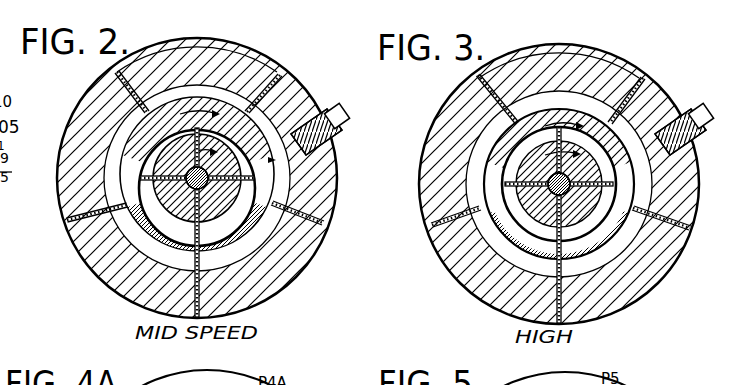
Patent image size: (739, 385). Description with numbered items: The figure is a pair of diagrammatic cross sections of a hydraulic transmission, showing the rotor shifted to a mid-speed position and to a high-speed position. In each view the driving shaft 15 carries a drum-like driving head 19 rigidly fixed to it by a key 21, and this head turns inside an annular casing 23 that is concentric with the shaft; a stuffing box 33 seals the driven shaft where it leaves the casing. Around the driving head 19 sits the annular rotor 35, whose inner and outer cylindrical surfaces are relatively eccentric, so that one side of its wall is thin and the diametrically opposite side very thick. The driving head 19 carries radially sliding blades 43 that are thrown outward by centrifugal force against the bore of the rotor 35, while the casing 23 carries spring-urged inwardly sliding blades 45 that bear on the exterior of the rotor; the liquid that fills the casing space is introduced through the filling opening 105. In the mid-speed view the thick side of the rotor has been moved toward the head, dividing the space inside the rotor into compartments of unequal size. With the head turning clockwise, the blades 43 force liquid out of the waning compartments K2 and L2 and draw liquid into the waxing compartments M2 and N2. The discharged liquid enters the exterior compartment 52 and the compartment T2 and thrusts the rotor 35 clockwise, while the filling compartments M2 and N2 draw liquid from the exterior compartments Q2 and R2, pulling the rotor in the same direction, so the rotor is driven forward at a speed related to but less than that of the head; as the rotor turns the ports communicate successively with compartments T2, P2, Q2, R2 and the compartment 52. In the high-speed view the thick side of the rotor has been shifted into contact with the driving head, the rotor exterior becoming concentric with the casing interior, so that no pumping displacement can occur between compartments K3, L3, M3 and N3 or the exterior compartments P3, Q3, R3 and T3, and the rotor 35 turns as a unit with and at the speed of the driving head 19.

In FIG. 2, the annular casing 23 is at (263, 298).
In FIG. 3, the annular casing 23 is at (482, 293).
In FIG. 2, the compartment T2 is at (110, 164).
In FIG. 3, the compartment T3 is at (473, 163).
In FIG. 2, the compartment P2 is at (220, 97).
In FIG. 3, the compartment P3 is at (573, 100).
In FIG. 2, the compartment R2 is at (252, 248).
In FIG. 3, the compartment R3 is at (613, 260).
In FIG. 2, the blades 43 is at (198, 236).
In FIG. 3, the stuffing box 33 is at (493, 241).
In FIG. 2, the compartment K2 is at (148, 196).
In FIG. 3, the compartment K3 is at (513, 202).
In FIG. 2, the driving head 19 is at (197, 198).
In FIG. 3, the driving head 19 is at (559, 190).
In FIG. 2, the compartment L2 is at (157, 156).
In FIG. 3, the compartment L3 is at (487, 135).
In FIG. 2, the compartment N2 is at (240, 206).
In FIG. 3, the compartment N3 is at (607, 217).
In FIG. 2, the driving shaft 15 is at (245, 176).
In FIG. 3, the driving shaft 15 is at (536, 212).
In FIG. 2, the blades 45 is at (192, 264).
In FIG. 3, the key 21 is at (578, 225).
In FIG. 2, the compartment M2 is at (272, 158).
In FIG. 3, the compartment M3 is at (641, 128).
In FIG. 2, the compartment S2 52 is at (148, 248).
In FIG. 2, the compartment Q2 is at (280, 198).
In FIG. 3, the compartment Q3 is at (652, 155).
In FIG. 2, the filling opening 105 is at (340, 121).
In FIG. 2, the annular rotor 35 is at (275, 159).
In FIG. 3, the annular rotor 35 is at (615, 233).